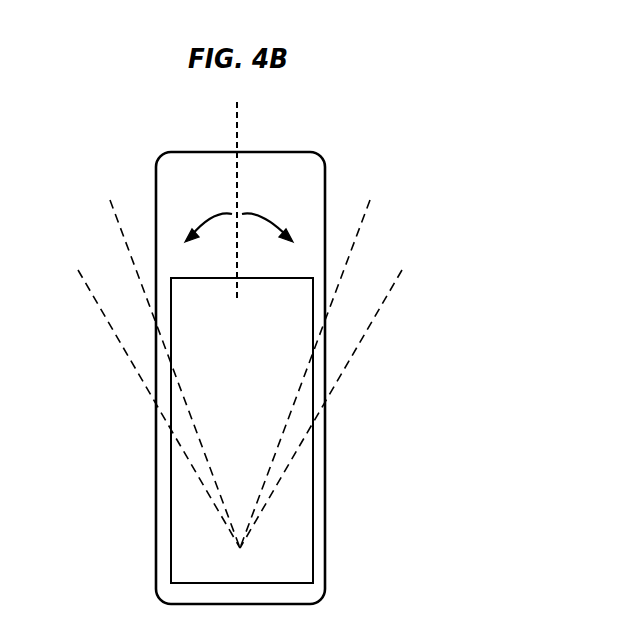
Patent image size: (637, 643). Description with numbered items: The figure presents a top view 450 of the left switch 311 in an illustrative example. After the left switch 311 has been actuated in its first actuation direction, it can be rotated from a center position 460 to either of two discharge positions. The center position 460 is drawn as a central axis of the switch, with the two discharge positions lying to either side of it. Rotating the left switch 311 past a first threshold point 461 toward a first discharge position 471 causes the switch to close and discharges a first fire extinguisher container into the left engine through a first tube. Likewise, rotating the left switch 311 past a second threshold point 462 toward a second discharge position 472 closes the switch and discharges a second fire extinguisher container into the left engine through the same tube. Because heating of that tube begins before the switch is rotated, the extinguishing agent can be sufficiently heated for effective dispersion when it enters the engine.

The left switch 311 is at (317, 530).
The center position 460 is at (237, 120).
The first threshold point 461 is at (116, 213).
The second threshold point 462 is at (365, 213).
The first discharge position 471 is at (100, 305).
The second discharge position 472 is at (382, 307).
The top view 450 is at (520, 267).